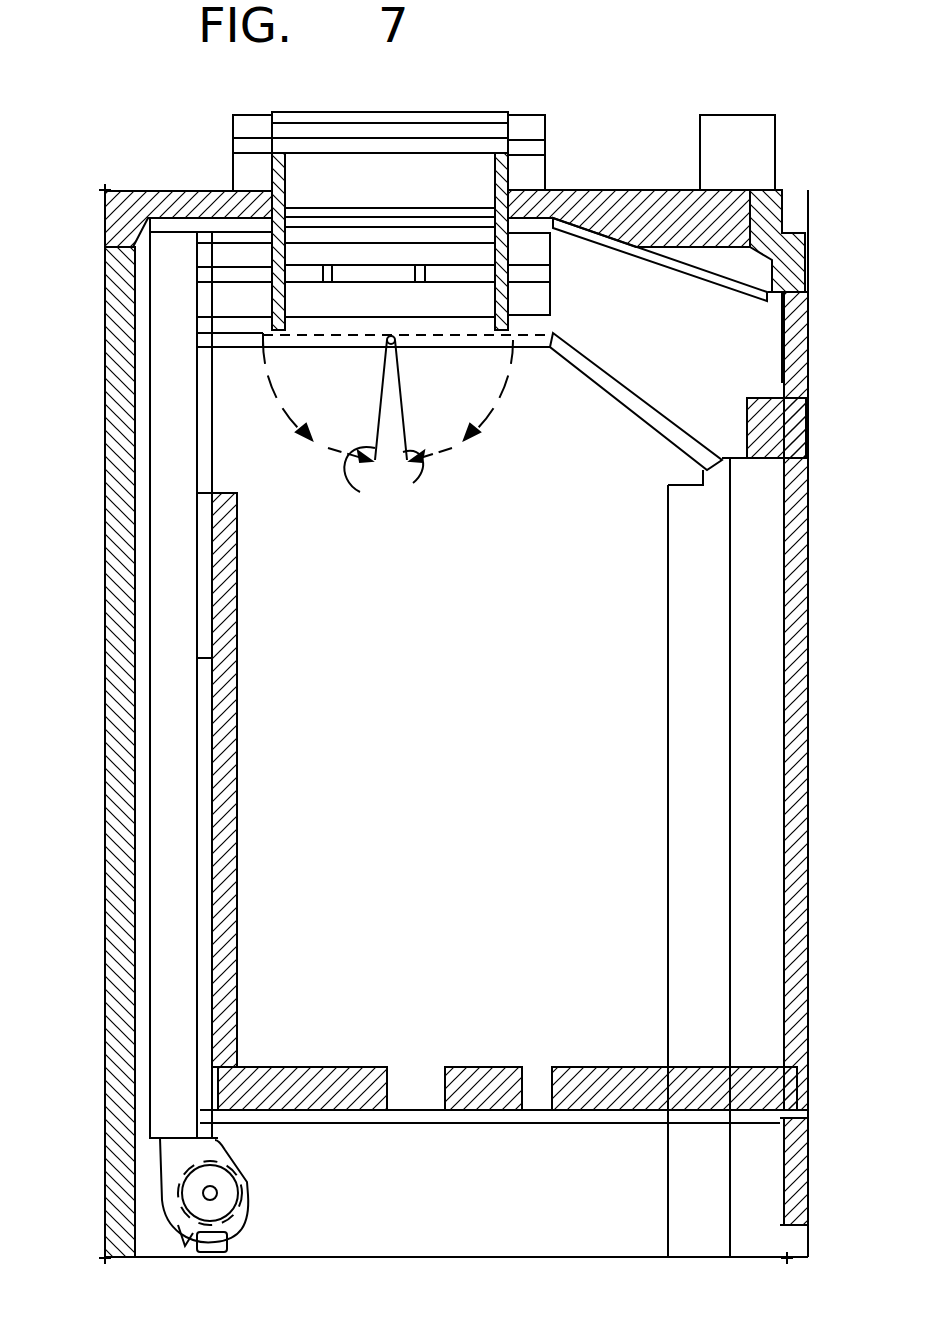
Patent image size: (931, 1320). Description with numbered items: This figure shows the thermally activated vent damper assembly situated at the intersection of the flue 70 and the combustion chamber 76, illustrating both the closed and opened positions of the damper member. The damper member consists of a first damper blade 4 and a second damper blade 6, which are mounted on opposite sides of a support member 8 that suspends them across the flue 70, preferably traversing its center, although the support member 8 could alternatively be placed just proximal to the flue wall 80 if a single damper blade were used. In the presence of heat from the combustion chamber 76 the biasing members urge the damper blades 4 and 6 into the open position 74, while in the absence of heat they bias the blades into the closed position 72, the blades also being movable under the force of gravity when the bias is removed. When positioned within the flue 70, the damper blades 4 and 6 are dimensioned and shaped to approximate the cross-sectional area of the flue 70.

The flue 70 is at (395, 192).
The flue wall 80 is at (510, 322).
The closed position 72 is at (331, 348).
The support member 8 is at (396, 350).
The open position 74 is at (394, 460).
The second damper blade 6 is at (360, 477).
The first damper blade 4 is at (417, 479).
The combustion chamber 76 is at (255, 708).